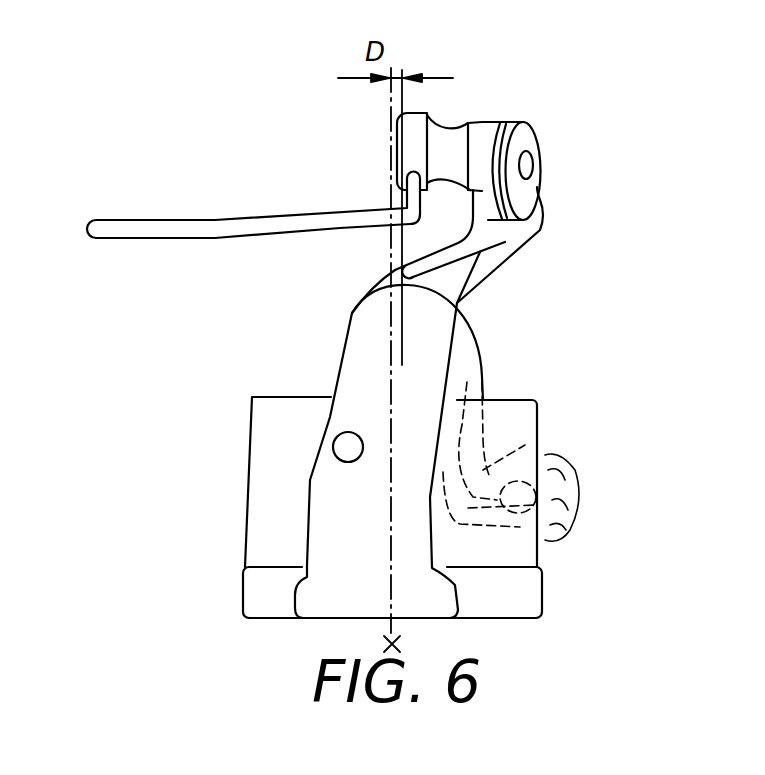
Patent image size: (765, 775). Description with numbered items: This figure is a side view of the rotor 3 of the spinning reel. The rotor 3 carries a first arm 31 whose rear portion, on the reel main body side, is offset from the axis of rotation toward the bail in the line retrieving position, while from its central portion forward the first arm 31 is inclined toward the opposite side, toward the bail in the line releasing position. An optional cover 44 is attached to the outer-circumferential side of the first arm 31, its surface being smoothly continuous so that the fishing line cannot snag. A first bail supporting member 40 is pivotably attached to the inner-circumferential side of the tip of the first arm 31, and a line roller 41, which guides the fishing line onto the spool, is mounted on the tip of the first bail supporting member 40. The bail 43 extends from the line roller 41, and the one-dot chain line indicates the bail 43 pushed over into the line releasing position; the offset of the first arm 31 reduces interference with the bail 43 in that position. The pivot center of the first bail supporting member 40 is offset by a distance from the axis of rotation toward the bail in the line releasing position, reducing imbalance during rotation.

The rotor 3 is at (547, 588).
The first bail supporting member 40 is at (517, 250).
The line roller 41 is at (443, 130).
The bail 43 is at (215, 228).
The cover 44 is at (461, 451).
The first arm 31 is at (450, 350).